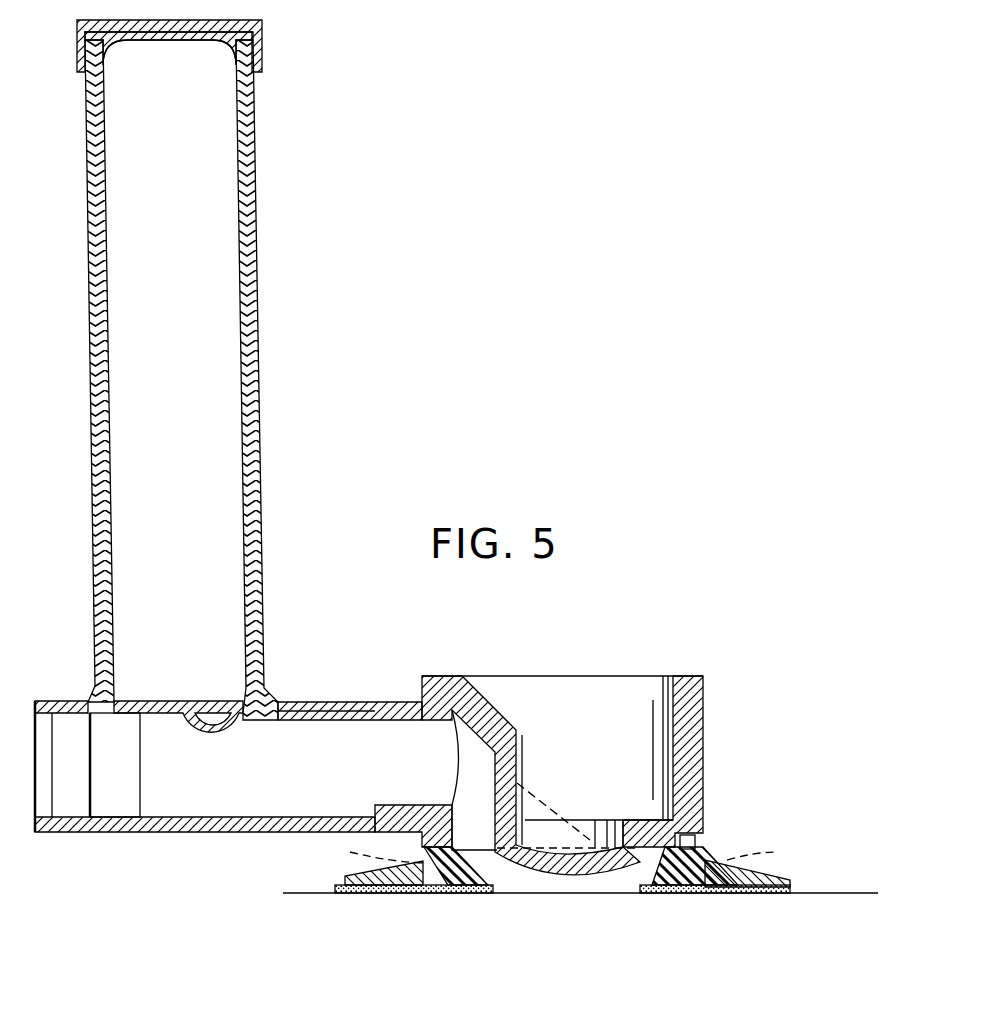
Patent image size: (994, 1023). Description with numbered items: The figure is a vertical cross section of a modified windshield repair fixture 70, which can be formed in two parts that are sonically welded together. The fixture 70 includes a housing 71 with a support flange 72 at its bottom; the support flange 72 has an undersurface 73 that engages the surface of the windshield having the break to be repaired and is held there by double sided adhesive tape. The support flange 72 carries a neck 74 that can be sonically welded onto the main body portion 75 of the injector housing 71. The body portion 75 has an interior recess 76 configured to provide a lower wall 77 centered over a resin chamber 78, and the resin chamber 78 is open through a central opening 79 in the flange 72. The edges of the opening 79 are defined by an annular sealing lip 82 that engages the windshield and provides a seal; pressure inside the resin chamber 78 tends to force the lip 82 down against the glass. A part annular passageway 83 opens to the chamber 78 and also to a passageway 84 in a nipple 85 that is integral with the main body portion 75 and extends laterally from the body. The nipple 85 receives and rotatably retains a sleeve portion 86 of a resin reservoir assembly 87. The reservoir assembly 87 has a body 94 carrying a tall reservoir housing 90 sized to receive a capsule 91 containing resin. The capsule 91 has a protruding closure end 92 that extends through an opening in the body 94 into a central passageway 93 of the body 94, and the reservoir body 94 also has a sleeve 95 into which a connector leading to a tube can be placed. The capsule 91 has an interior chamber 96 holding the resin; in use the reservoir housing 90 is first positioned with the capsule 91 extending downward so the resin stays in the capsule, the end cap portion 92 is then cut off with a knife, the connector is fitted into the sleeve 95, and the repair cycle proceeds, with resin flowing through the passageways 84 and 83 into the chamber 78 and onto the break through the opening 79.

The modified fixture 70 is at (291, 400).
The housing 71 is at (706, 705).
The support flange 72 is at (773, 851).
The undersurface 73 is at (700, 893).
The neck 74 is at (712, 857).
The main body portion 75 is at (695, 772).
The interior recess 76 is at (623, 675).
The lower wall 77 is at (574, 860).
The resin chamber 78 is at (630, 886).
The central opening 79 is at (515, 884).
The annular sealing lip 82 is at (483, 895).
The part annular passageway 83 is at (473, 813).
The passageway 84 is at (352, 750).
The nipple 85 is at (298, 833).
The sleeve portion 86 is at (260, 832).
The resin reservoir assembly 87 is at (276, 601).
The reservoir housing 90 is at (262, 489).
The capsule 91 is at (256, 186).
The protruding closure end 92 is at (214, 734).
The central passageway 93 is at (162, 797).
The body 94 is at (83, 833).
The sleeve 95 is at (57, 701).
The interior chamber 96 is at (200, 273).